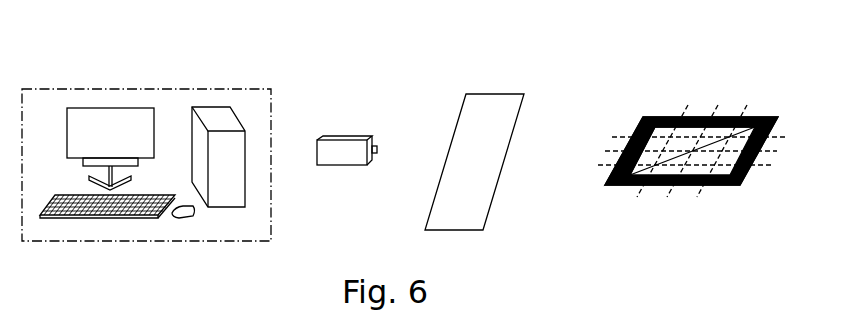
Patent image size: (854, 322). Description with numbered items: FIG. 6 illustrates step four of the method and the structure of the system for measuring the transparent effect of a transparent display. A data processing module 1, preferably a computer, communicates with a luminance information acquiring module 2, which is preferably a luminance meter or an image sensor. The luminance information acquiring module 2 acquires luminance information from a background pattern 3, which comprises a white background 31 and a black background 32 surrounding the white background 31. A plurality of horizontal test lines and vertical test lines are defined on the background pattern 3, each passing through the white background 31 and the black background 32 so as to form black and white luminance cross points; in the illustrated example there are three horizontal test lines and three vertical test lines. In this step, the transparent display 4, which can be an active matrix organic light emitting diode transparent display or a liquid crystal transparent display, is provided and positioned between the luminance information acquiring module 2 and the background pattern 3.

The data processing module 1 is at (144, 89).
The luminance information acquiring module 2 is at (343, 150).
The background pattern 3 is at (702, 121).
The transparent display 4 is at (487, 109).
The white background 31 is at (753, 117).
The black background 32 is at (758, 53).